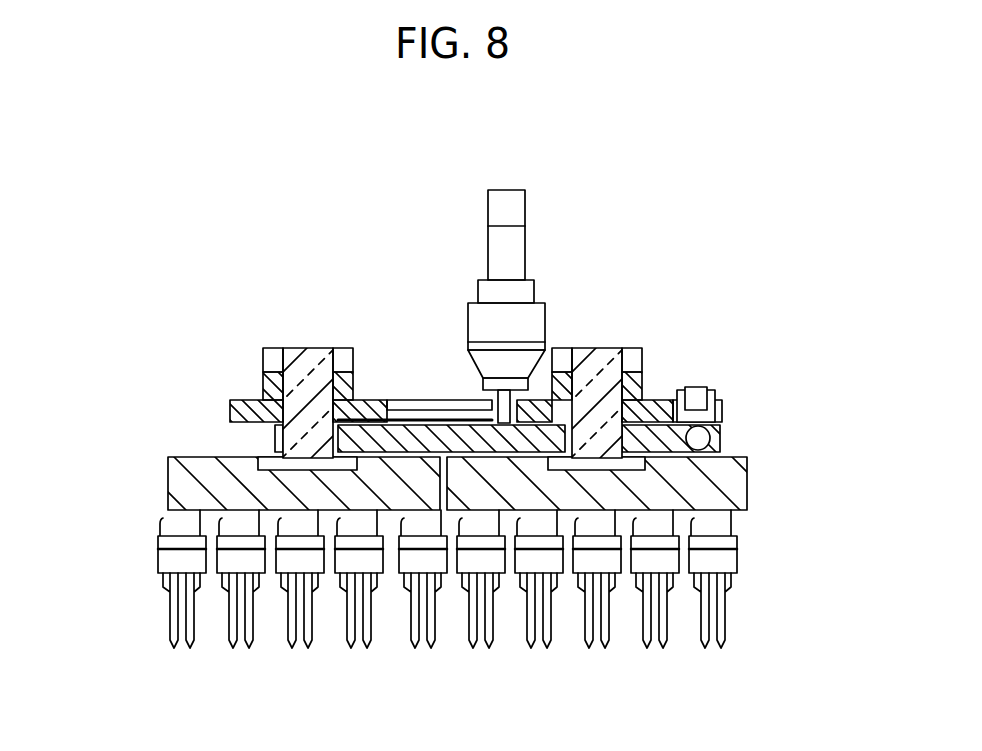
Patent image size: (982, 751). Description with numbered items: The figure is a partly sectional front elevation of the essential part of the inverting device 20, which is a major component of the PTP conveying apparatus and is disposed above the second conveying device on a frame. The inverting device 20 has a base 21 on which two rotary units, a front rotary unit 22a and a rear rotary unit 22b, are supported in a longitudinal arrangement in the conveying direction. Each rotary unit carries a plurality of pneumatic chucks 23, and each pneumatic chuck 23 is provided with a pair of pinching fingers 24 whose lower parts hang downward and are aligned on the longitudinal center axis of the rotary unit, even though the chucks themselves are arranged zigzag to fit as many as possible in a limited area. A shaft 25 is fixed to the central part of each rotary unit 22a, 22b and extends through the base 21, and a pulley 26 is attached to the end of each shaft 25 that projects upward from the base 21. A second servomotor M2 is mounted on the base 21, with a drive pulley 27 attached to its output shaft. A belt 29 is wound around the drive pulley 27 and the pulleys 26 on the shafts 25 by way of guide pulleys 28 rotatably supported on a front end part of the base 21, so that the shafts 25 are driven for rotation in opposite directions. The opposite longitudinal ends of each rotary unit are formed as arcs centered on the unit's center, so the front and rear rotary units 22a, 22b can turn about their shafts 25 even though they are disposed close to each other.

The inverting device 20 is at (565, 305).
The second servomotor M2 is at (476, 325).
The base 21 is at (722, 440).
The front rotary unit 22a is at (748, 482).
The rear rotary unit 22b is at (170, 482).
The pneumatic chuck 23 is at (166, 523).
The pinching fingers 24 is at (195, 630).
The shaft 25 is at (297, 348).
The pulley 26 is at (243, 400).
The drive pulley 27 is at (484, 403).
The guide pulleys 28 is at (714, 390).
The belt 29 is at (400, 400).